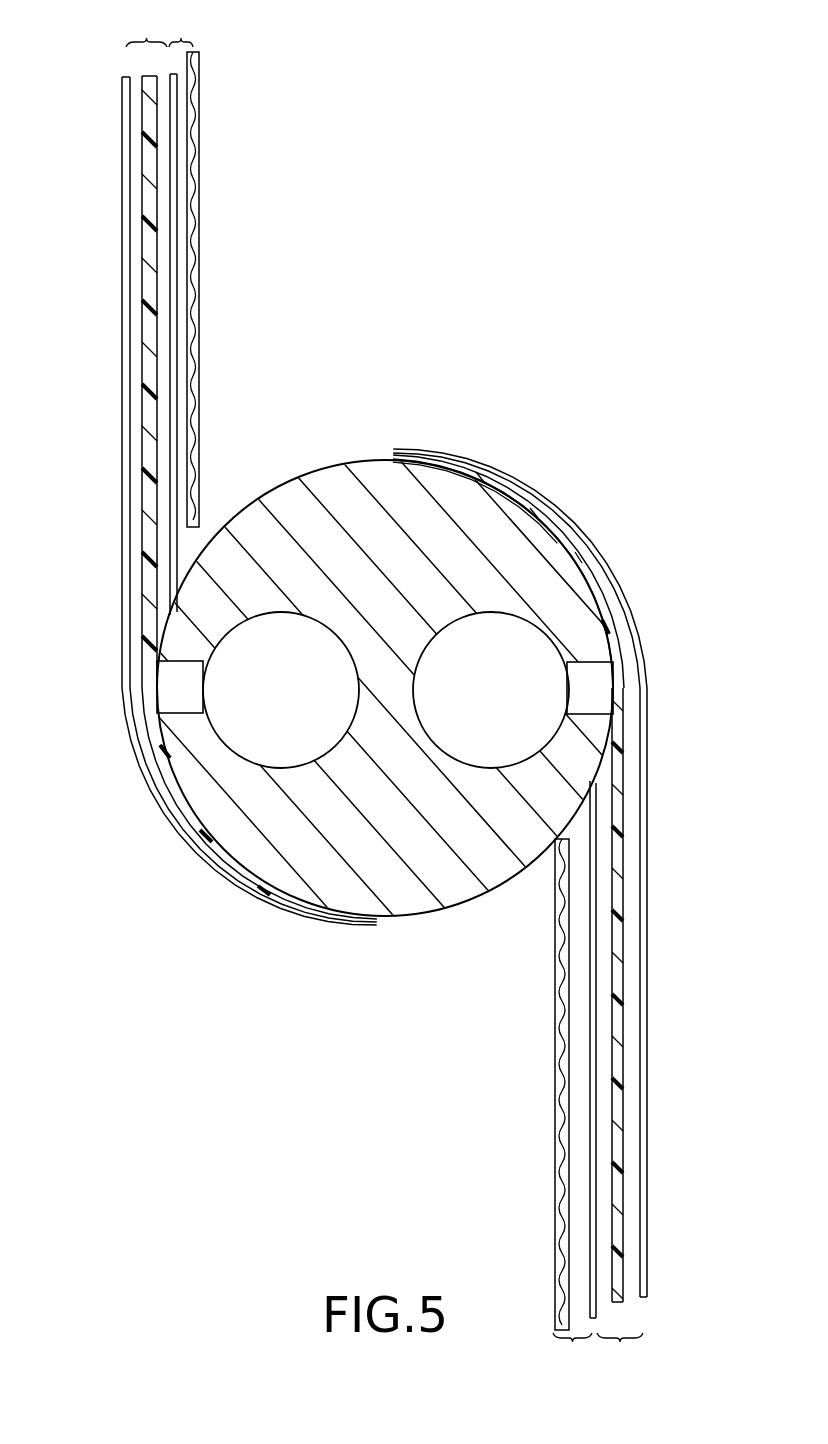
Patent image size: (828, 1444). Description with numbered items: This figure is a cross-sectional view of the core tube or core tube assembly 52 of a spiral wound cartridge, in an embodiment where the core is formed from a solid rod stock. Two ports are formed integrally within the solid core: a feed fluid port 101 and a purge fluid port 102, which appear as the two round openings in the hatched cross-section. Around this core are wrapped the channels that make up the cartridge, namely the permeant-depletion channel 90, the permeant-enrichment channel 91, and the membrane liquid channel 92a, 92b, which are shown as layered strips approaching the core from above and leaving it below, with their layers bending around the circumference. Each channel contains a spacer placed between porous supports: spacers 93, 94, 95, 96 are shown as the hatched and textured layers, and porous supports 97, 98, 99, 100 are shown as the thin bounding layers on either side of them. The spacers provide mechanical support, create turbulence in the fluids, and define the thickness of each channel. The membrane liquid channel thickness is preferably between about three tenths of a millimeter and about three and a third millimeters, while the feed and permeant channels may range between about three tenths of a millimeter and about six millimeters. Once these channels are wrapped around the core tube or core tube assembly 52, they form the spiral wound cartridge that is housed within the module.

The core tube or core tube assembly 52 is at (337, 457).
The permeant-depletion channel 90 is at (141, 26).
The permeant-enrichment channel 91 is at (620, 1354).
The membrane liquid channel 92a is at (189, 26).
The membrane liquid channel 92b is at (570, 1354).
The spacer 93 is at (199, 148).
The spacer 94 is at (152, 298).
The spacer 95 is at (555, 1015).
The spacer 96 is at (623, 1140).
The porous support 97 is at (170, 74).
The porous support 98 is at (122, 92).
The porous support 99 is at (647, 1283).
The porous support 100 is at (596, 1308).
The feed fluid port 101 is at (238, 732).
The purge fluid port 102 is at (468, 752).